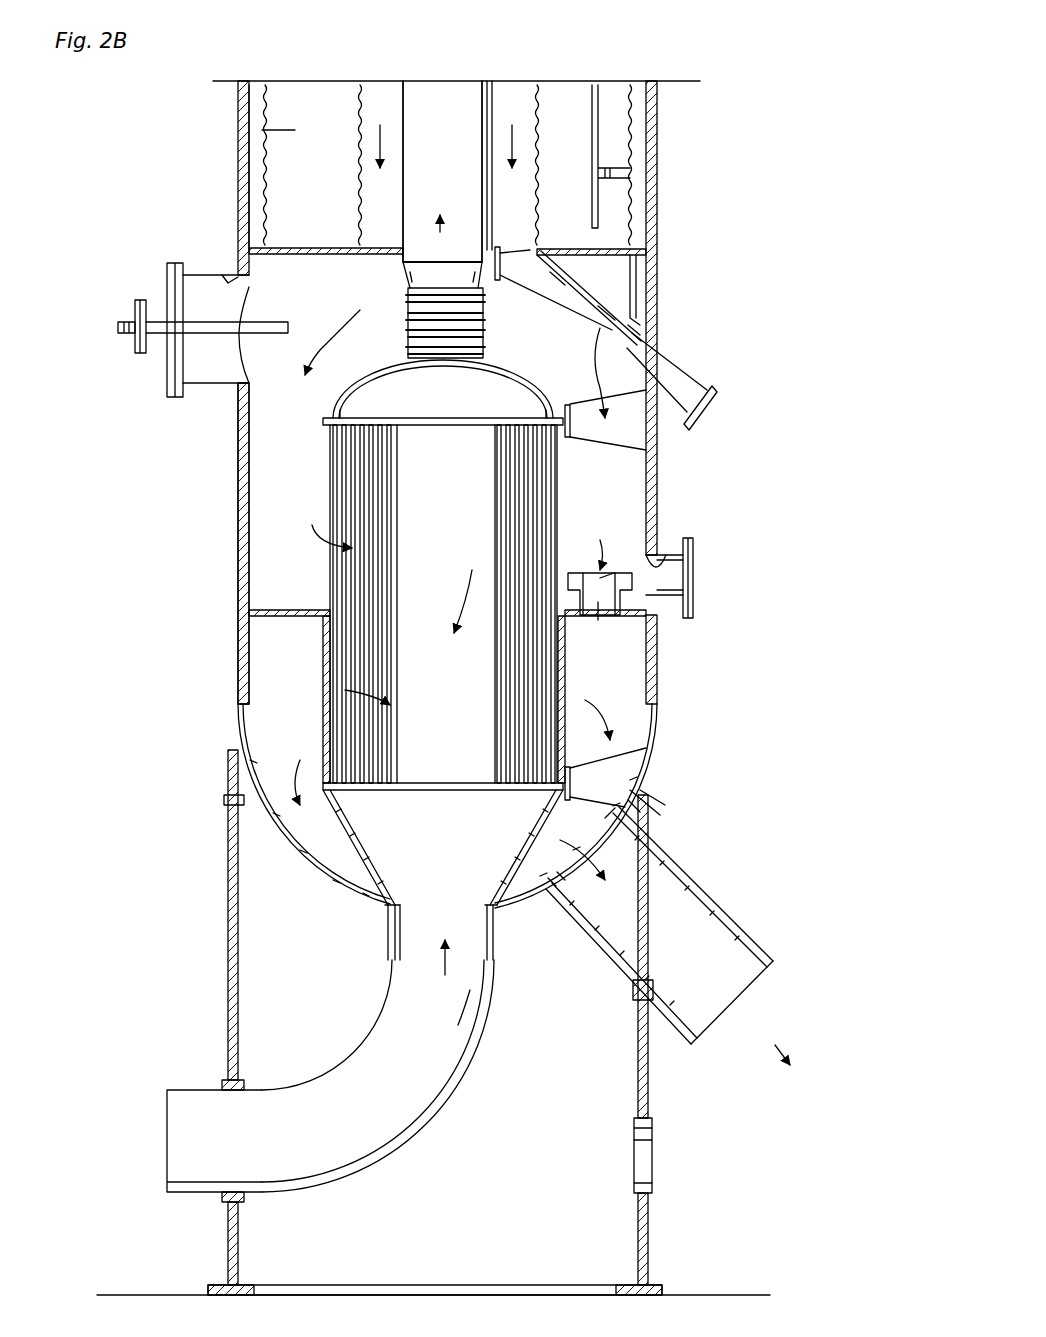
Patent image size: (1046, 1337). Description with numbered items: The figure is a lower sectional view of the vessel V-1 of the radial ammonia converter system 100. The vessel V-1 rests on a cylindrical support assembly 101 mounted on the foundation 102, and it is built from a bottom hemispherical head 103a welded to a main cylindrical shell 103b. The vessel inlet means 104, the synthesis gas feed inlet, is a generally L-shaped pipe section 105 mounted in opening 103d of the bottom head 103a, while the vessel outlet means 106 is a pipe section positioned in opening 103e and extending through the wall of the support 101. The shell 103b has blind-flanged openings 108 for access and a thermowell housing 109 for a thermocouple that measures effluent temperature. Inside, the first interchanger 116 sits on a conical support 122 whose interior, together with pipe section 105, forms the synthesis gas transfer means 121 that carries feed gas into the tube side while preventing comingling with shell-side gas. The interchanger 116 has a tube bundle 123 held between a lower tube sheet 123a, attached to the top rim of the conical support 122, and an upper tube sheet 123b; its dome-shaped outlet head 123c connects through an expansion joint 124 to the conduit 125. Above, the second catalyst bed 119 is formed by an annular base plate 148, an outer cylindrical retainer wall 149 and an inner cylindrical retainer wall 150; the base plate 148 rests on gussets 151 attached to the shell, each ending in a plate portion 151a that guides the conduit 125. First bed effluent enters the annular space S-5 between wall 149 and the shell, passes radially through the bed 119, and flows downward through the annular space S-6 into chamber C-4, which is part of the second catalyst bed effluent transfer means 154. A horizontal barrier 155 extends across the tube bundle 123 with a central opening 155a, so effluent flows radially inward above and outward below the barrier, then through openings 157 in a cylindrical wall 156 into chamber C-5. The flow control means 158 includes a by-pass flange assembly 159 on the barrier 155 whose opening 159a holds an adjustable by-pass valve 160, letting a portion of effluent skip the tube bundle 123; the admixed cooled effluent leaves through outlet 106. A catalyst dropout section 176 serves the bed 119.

The radial ammonia converter system 100 is at (185, 423).
The cylindrical support assembly 101 is at (228, 1005).
The foundation 102 is at (688, 1292).
The bottom hemispherical head 103a is at (320, 868).
The main cylindrical shell 103b is at (238, 480).
The opening 103d is at (495, 895).
The opening 103e is at (575, 895).
The vessel inlet means 104 is at (230, 1137).
The L-shaped pipe section 105 is at (405, 1142).
The vessel outlet means 106 is at (700, 890).
The openings 108 is at (220, 275).
The thermowell housing 109 is at (157, 322).
The first heat exchange means or interchanger 116 is at (328, 556).
The second catalyst bed 119 is at (262, 130).
The synthesis gas transfer means 121 is at (442, 608).
The conical support 122 is at (358, 839).
The tube bundle 123 is at (520, 469).
The lower tube sheet 123a is at (400, 790).
The upper tube sheet 123b is at (433, 418).
The outlet head 123c is at (505, 398).
The expansion joint 124 is at (410, 305).
The conduit 125 is at (458, 137).
The base plate 148 is at (278, 252).
The outer cylindrical retainer wall 149 is at (270, 95).
The inner cylindrical retainer wall 150 is at (365, 95).
The gussets 151 is at (527, 260).
The inwardly facing plate portion 151a is at (496, 240).
The second catalyst bed effluent transfer means 154 is at (262, 507).
The circular plate or barrier 155 is at (270, 613).
The opening 155a is at (445, 597).
The cylindrical wall 156 is at (320, 660).
The openings 157 is at (325, 700).
The flow control means 158 is at (590, 515).
The by-pass flange assembly 159 is at (695, 570).
The opening 159a is at (606, 627).
The by-pass valve 160 is at (598, 573).
The catalyst removal or dropout section 176 is at (670, 368).
The chamber C-4 is at (331, 336).
The chamber C-5 is at (615, 735).
The annular space S-5 is at (252, 162).
The annular space S-6 is at (512, 97).
The vessel V-1 is at (750, 680).